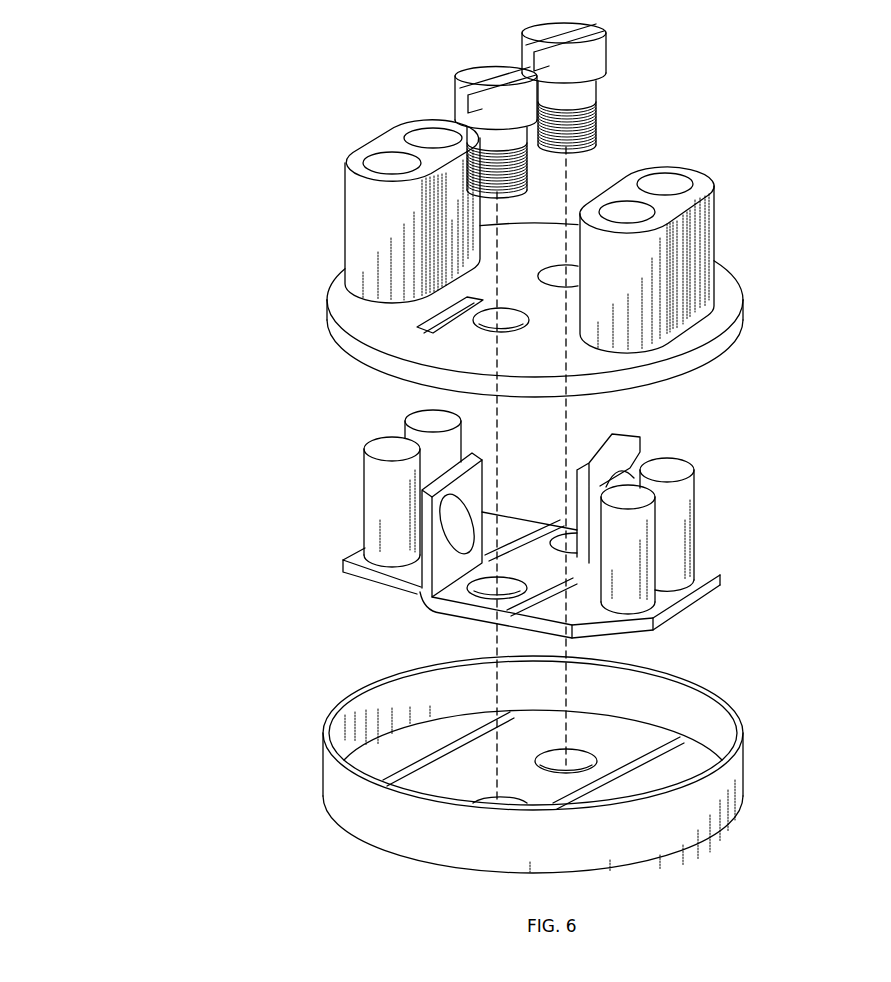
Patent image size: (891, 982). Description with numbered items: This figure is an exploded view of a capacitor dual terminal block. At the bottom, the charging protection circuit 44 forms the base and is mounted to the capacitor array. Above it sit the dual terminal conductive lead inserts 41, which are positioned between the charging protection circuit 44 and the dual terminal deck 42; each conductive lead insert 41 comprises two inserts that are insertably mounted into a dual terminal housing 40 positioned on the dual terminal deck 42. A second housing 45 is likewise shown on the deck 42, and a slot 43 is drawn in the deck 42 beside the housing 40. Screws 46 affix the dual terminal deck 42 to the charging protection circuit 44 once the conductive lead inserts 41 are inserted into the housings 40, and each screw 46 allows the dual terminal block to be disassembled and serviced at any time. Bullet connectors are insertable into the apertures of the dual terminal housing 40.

The dual terminal housing 40 is at (367, 223).
The dual terminal conductive lead insert 41 is at (388, 493).
The dual terminal deck 42 is at (345, 347).
The slot 43 is at (418, 327).
The charging protection circuit 44 is at (330, 725).
The terminal post 45 is at (665, 187).
The screw 46 is at (577, 91).